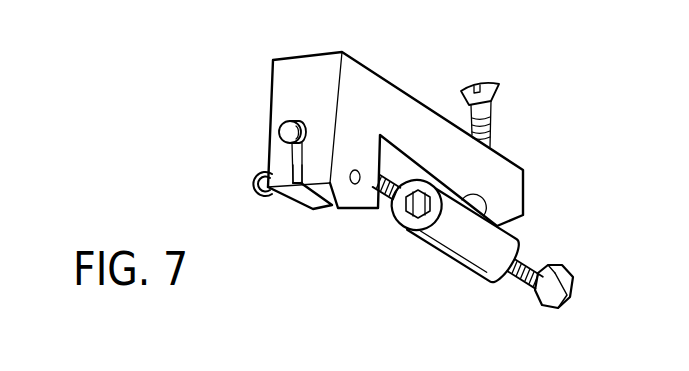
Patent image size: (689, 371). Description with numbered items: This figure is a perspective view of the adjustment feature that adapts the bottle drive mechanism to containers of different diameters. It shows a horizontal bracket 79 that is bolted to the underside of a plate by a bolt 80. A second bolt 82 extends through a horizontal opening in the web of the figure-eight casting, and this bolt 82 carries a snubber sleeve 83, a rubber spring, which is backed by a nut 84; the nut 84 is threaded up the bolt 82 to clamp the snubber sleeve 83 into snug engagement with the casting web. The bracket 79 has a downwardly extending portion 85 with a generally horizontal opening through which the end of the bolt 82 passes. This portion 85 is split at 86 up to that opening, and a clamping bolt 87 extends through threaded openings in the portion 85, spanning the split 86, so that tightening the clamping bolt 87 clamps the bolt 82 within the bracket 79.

The horizontal bracket 79 is at (427, 127).
The bolt 80 is at (489, 128).
The bolt 82 is at (523, 277).
The snubber sleeve 83 is at (445, 242).
The nut 84 is at (403, 220).
The downwardly extending portion 85 is at (276, 171).
The split 86 is at (300, 175).
The clamping bolt 87 is at (273, 199).